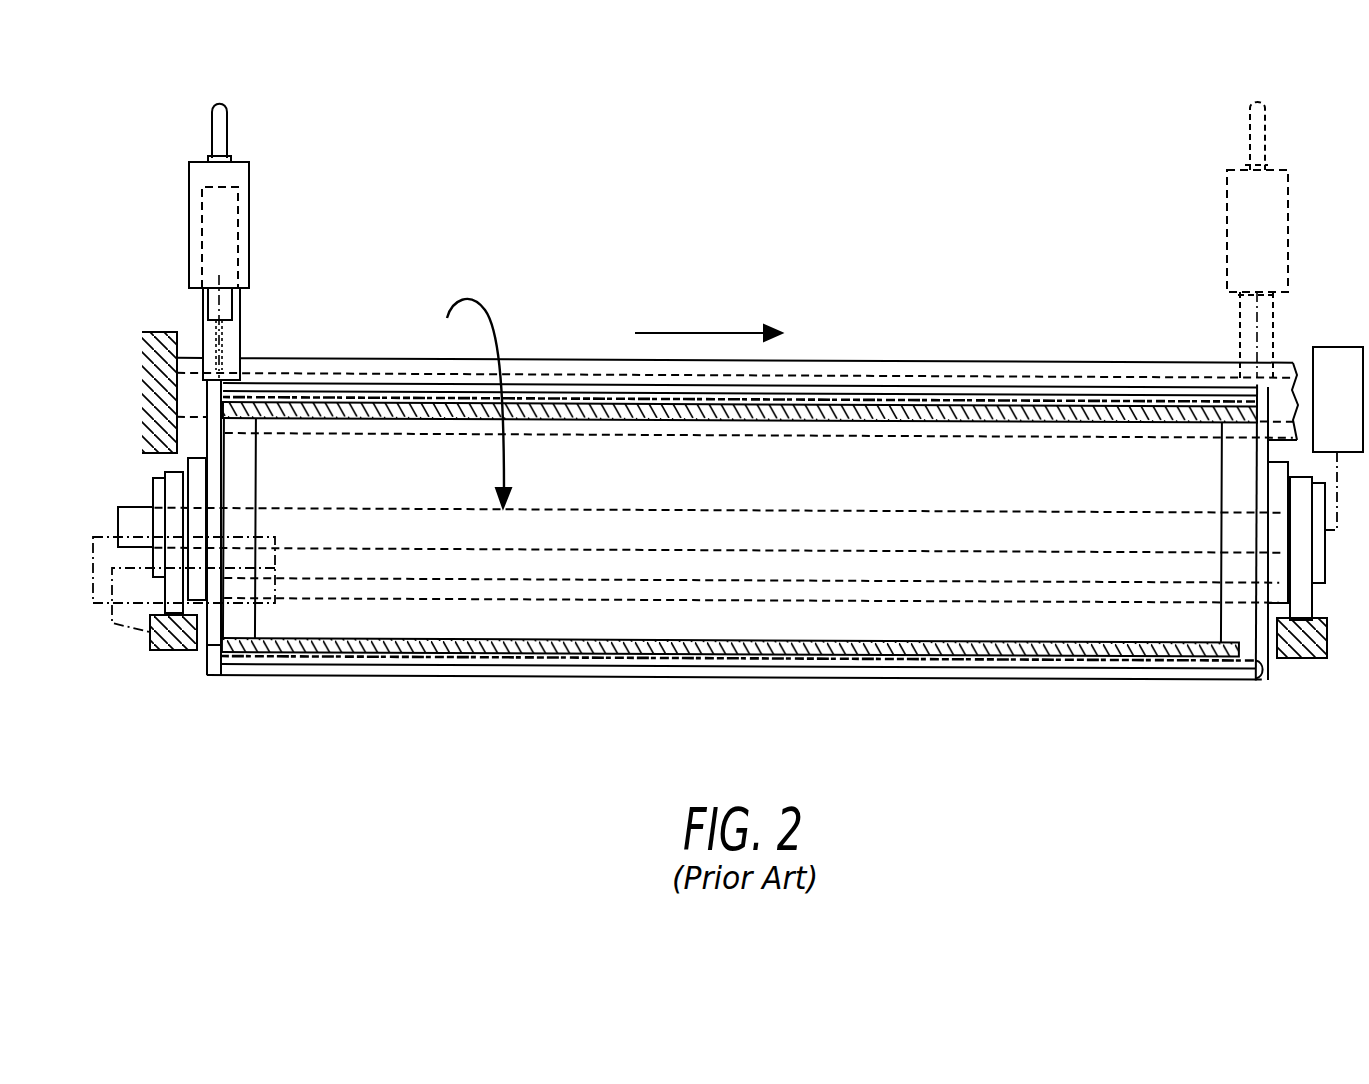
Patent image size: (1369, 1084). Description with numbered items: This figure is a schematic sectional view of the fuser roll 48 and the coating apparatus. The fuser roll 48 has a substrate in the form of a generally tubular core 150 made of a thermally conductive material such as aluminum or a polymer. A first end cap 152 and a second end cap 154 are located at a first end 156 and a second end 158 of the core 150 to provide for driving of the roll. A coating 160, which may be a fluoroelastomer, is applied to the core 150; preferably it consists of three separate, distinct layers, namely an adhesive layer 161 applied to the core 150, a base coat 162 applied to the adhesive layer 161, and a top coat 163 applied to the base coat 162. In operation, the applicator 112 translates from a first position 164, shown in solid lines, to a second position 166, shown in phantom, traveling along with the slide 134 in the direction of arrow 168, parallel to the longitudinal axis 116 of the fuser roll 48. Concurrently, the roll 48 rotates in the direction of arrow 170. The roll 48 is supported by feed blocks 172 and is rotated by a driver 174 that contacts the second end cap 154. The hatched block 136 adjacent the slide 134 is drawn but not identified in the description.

The fuser roll 48 is at (1007, 697).
The applicator 112 is at (250, 188).
The longitudinal axis 116 is at (97, 528).
The slide 134 is at (343, 358).
The block 136 is at (159, 332).
The core 150 is at (1075, 418).
The first end cap 152 is at (208, 440).
The second end cap 154 is at (1267, 408).
The first end 156 is at (225, 647).
The second end 158 is at (1263, 680).
The coating 160 is at (859, 334).
The adhesive layer 161 is at (1013, 402).
The base coat 162 is at (963, 392).
The top coat 163 is at (908, 383).
The first position 164 is at (243, 301).
The second position 166 is at (1297, 213).
The arrow 168 is at (678, 333).
The arrow 170 is at (495, 322).
The feed blocks 172 is at (170, 588).
The driver 174 is at (1333, 347).